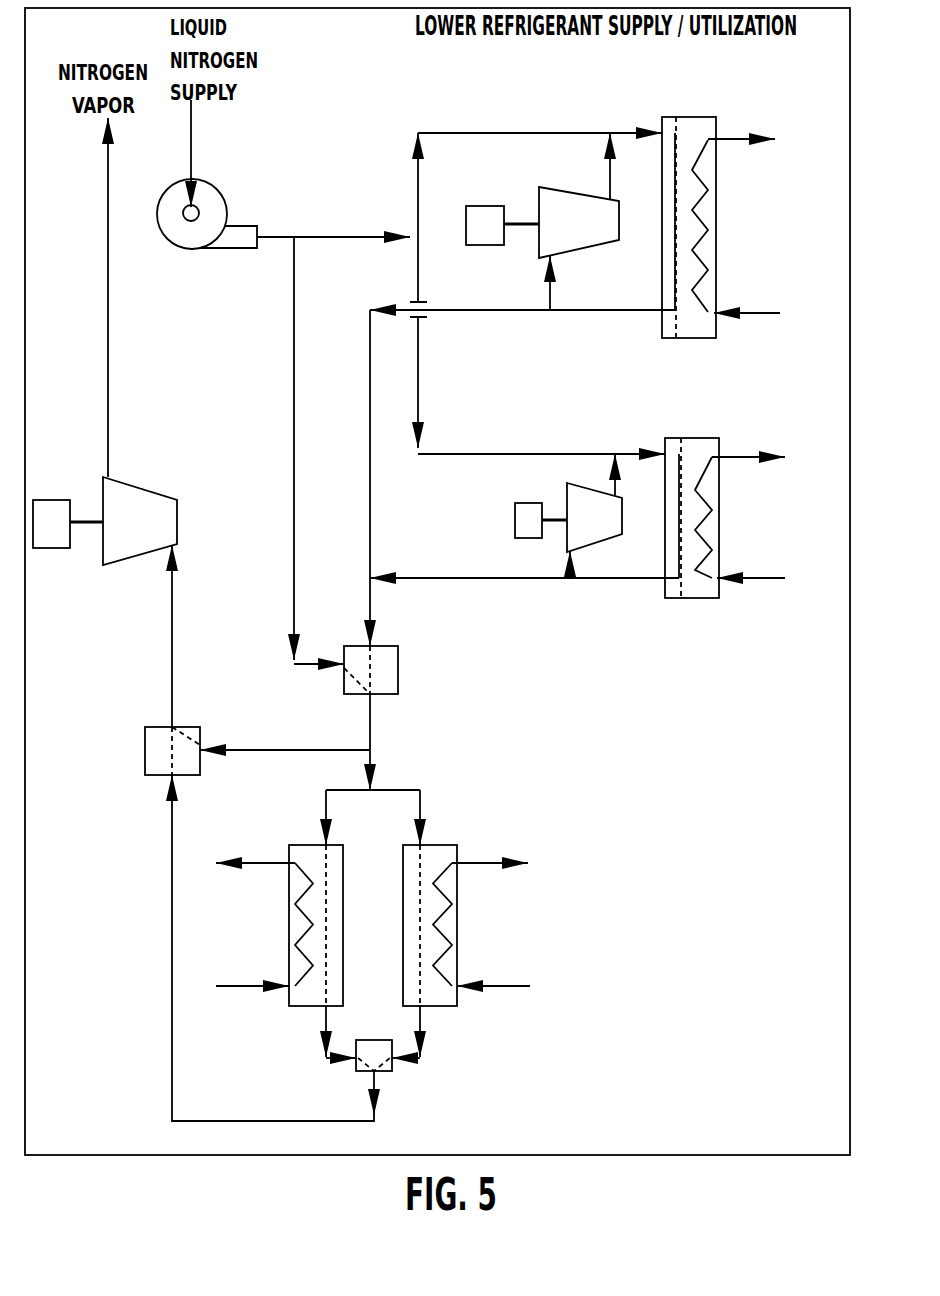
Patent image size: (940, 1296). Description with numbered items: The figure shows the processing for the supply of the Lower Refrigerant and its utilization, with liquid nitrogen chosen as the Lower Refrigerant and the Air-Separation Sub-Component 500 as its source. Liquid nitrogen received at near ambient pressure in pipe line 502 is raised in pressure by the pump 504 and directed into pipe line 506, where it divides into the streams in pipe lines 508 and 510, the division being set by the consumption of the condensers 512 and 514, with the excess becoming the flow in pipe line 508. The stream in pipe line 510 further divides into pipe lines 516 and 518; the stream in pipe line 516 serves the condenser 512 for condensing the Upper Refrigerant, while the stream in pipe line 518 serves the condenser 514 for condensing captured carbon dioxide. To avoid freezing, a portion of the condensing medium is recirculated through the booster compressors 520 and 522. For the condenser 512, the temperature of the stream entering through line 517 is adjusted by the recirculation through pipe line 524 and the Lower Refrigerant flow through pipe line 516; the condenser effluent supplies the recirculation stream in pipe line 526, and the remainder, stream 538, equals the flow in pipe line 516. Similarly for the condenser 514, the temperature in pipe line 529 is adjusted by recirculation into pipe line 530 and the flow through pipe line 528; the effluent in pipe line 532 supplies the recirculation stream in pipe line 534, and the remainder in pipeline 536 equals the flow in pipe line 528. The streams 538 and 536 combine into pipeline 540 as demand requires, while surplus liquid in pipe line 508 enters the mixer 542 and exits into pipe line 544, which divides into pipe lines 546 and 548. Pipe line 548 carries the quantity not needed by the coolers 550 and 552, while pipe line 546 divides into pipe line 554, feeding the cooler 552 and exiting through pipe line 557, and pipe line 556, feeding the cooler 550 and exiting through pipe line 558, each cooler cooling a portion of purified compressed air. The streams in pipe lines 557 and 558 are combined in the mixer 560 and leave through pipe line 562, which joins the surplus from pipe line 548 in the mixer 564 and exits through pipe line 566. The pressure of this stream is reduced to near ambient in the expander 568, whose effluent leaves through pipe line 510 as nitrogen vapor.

The Air-Separation Sub-Component 500 is at (663, 665).
The pipe line 502 is at (191, 132).
The pump 504 is at (160, 230).
The pipe line 506 is at (272, 237).
The pipe line 508 is at (294, 365).
The pipe line 510 is at (327, 237).
The condenser 512 is at (693, 125).
The condenser 514 is at (690, 588).
The pipe line 516 is at (418, 168).
The line 517 is at (623, 132).
The pipe line 518 is at (418, 362).
The booster compressor 520 is at (585, 200).
The booster compressor 522 is at (603, 531).
The pipe line 524 is at (610, 183).
The pipe line 526 is at (548, 300).
The pipe line 528 is at (526, 454).
The pipe line 529 is at (627, 454).
The pipe line 530 is at (585, 490).
The pipe line 532 is at (638, 578).
The pipe line 534 is at (567, 567).
The pipeline 536 is at (436, 578).
The stream 538 is at (370, 368).
The pipeline 540 is at (370, 600).
The mixer 542 is at (348, 650).
The pipe line 544 is at (370, 737).
The pipe line 546 is at (366, 755).
The pipe line 548 is at (275, 750).
The cooler 550 is at (452, 893).
The cooler 552 is at (300, 997).
The pipe line 554 is at (326, 805).
The pipe line 556 is at (420, 808).
The pipe line 557 is at (326, 1018).
The pipe line 558 is at (420, 1015).
The mixer 560 is at (372, 1050).
The pipe line 562 is at (172, 855).
The mixer 564 is at (190, 730).
The pipe line 566 is at (172, 615).
The expander 568 is at (167, 520).